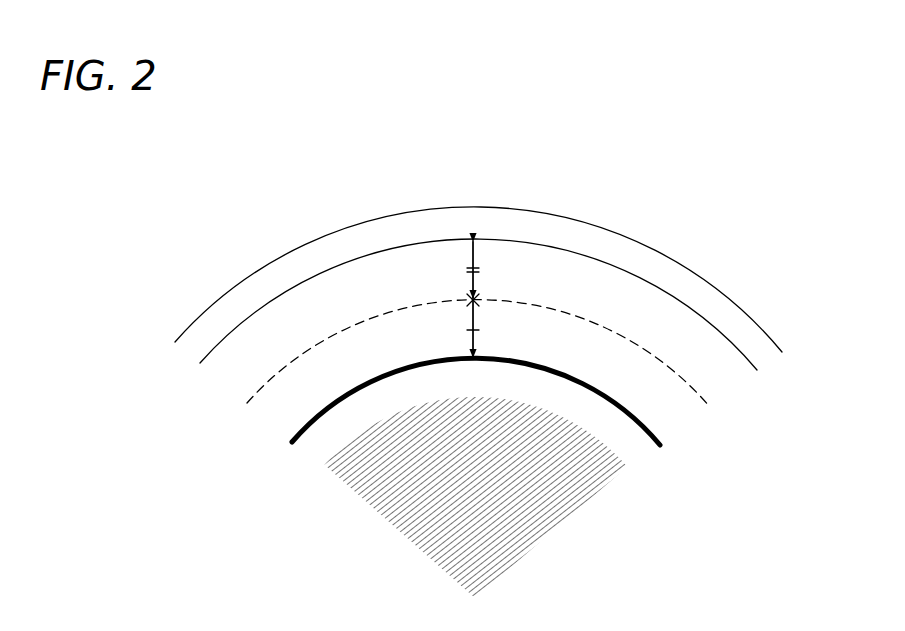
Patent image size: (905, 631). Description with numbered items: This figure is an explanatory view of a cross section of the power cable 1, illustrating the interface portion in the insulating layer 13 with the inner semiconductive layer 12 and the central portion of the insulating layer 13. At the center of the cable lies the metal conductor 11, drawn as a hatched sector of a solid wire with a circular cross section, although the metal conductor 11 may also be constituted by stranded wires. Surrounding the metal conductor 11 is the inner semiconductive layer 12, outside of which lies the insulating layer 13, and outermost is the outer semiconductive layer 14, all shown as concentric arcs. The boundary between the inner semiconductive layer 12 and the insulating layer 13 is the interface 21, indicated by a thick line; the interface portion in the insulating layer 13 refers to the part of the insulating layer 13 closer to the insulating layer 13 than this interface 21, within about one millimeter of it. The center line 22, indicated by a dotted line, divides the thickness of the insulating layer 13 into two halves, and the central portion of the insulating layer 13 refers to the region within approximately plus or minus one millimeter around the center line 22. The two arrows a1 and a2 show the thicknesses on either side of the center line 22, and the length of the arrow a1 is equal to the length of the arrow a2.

The power cable 1 is at (411, 193).
The metal conductor 11 is at (518, 533).
The inner semiconductive layer 12 is at (613, 427).
The insulating layer 13 is at (610, 307).
The outer semiconductive layer 14 is at (565, 240).
The interface 21 is at (360, 382).
The center line 22 is at (497, 300).
The arrow a1 is at (470, 273).
The arrow a2 is at (473, 343).